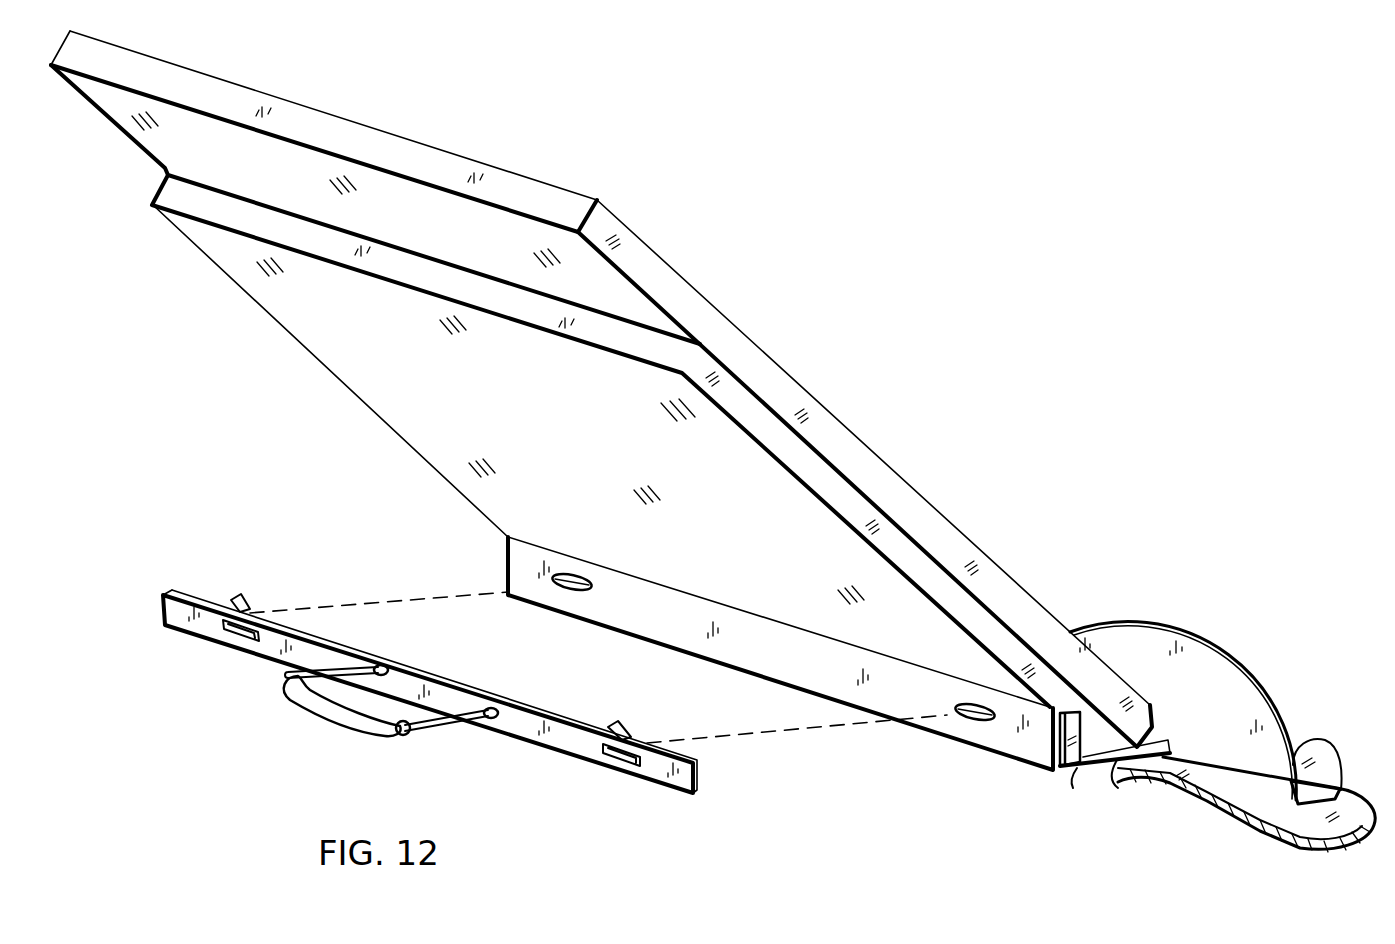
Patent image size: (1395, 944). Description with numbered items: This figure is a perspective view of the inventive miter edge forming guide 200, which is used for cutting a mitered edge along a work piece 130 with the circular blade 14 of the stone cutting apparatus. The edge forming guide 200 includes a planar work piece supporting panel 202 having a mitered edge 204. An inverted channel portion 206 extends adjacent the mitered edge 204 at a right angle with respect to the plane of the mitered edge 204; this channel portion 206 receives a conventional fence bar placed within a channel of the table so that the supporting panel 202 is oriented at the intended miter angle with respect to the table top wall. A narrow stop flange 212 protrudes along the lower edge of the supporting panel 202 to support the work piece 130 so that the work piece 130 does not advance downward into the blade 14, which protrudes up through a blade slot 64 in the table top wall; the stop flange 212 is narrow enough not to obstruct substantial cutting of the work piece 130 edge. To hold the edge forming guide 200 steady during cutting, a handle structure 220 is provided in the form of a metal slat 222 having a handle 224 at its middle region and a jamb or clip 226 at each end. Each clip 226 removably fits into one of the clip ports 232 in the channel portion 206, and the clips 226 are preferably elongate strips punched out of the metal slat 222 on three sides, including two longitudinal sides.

The miter edge forming guide 200 is at (890, 287).
The work piece 130 is at (655, 252).
The work piece supporting panel 202 is at (290, 327).
The clip ports 232 is at (577, 580).
The inverted channel portion 206 is at (1085, 768).
The mitered edge 204 is at (1112, 767).
The circular blade 14 is at (1213, 652).
The blade slot 64 is at (1317, 785).
The stop flange 212 is at (1168, 788).
The handle structure 220 is at (699, 778).
The clip 226 is at (242, 610).
The metal slat 222 is at (524, 732).
The handle 224 is at (369, 727).